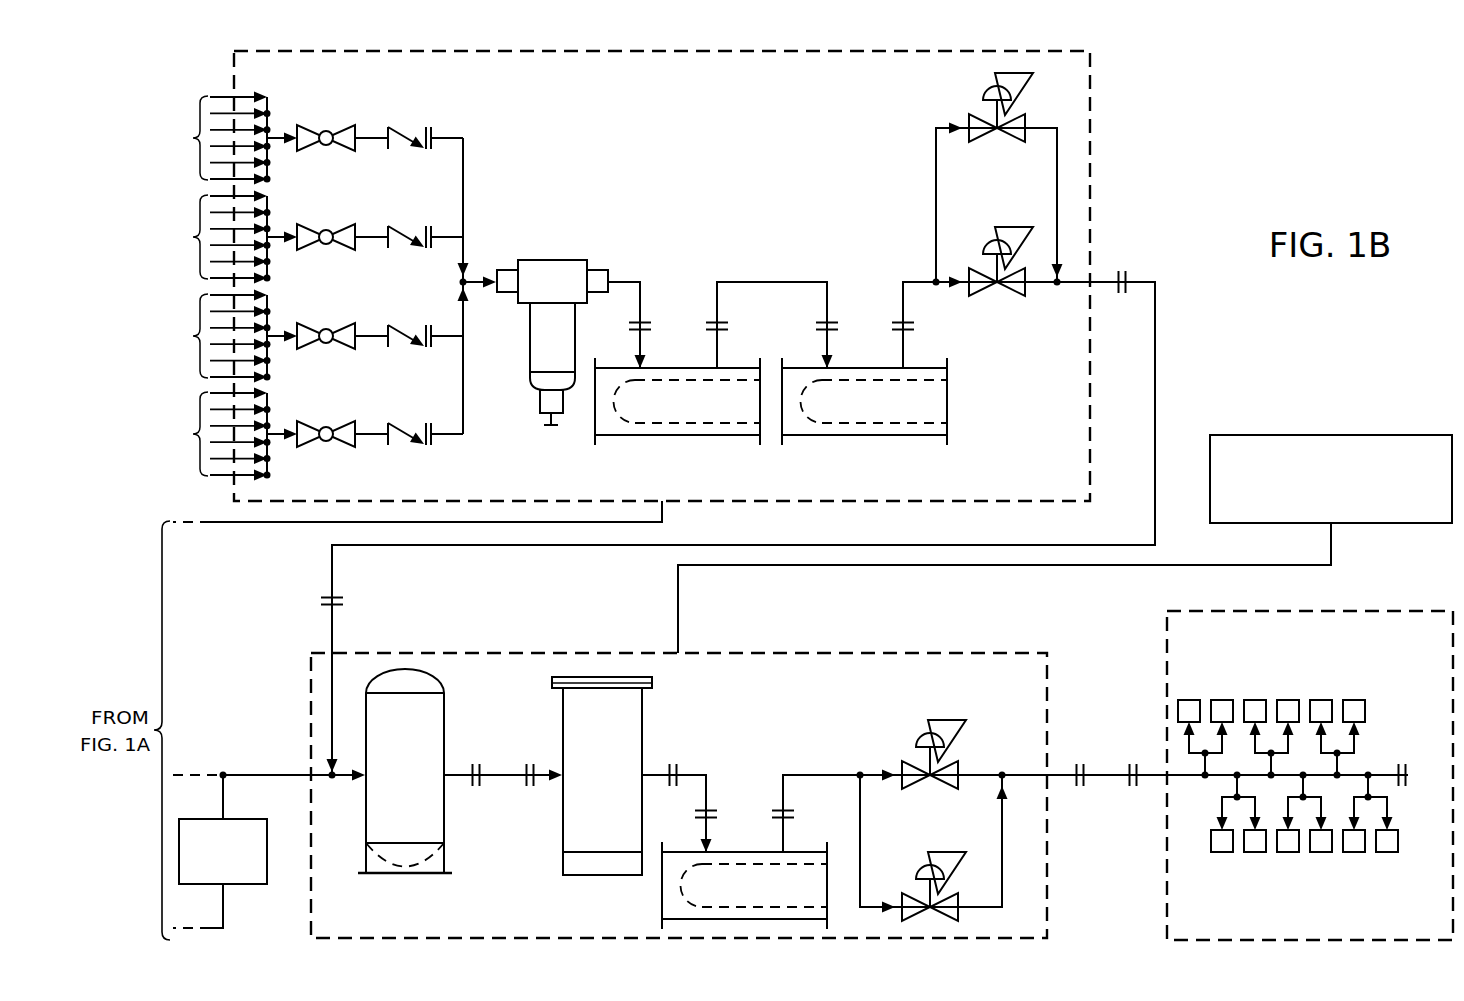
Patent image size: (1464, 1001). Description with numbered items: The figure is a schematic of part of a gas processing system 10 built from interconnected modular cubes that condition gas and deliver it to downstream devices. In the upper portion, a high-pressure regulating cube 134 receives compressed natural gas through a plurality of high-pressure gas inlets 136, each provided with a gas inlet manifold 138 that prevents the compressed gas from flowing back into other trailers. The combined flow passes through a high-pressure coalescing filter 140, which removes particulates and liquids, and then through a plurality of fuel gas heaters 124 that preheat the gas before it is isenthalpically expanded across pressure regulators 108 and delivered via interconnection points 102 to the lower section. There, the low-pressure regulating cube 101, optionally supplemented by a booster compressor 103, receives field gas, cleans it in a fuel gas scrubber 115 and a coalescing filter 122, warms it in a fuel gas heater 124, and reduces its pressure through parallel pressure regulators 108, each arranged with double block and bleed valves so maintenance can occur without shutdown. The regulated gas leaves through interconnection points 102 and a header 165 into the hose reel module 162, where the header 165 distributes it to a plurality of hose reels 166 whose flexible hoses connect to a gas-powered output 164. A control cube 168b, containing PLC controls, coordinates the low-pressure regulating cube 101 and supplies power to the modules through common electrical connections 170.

The gas processing system 10 is at (1248, 104).
The low-pressure regulating cube 101 is at (1056, 876).
The interconnection points 102 is at (1091, 815).
The booster compressor 103 is at (202, 869).
The pressure regulator 108 is at (1008, 144).
The fuel gas scrubber 115 is at (384, 786).
The coalescing filter 122 is at (581, 788).
The fuel gas heater 124 is at (678, 438).
The high-pressure regulating cube 134 is at (1100, 182).
The high-pressure gas inlets 136 is at (219, 286).
The gas inlet manifold 138 is at (419, 127).
The high-pressure coalescing filter 140 is at (541, 259).
The hose reel module 162 is at (1364, 603).
The gas-powered output 164 is at (1404, 762).
The header 165 is at (1133, 762).
The hose reels 166 is at (1224, 699).
The control cube 168b is at (1303, 496).
The common electrical connections 170 is at (664, 518).